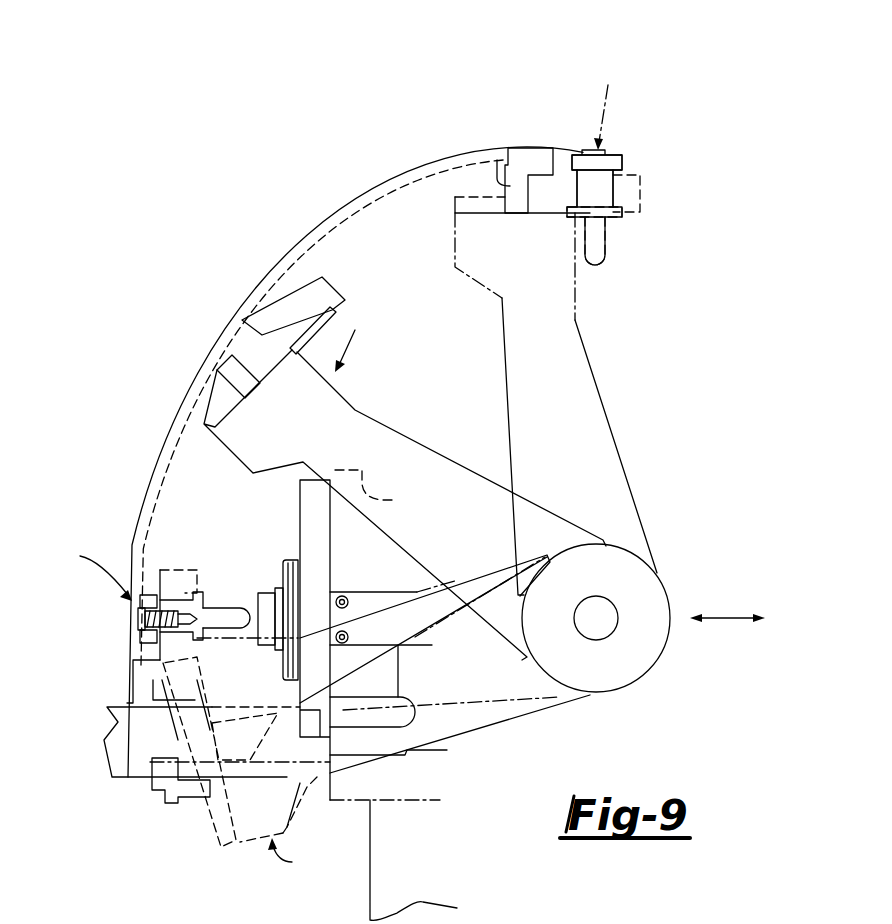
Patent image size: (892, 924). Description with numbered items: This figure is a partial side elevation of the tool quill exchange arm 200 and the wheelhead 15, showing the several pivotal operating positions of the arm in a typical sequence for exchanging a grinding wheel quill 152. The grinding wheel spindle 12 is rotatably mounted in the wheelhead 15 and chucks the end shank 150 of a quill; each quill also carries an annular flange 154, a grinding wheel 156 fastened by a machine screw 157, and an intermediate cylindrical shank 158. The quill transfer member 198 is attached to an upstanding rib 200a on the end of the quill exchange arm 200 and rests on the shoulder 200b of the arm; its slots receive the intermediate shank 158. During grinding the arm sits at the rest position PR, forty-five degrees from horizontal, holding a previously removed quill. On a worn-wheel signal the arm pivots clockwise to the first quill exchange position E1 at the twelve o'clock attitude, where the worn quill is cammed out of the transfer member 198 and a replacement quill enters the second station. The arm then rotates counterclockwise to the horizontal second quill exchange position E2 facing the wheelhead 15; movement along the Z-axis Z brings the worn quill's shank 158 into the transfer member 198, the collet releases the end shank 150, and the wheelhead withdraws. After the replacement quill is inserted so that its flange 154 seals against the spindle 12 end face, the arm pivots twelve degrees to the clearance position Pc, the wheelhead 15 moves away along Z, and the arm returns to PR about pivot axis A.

The grinding wheel spindle 12 is at (284, 590).
The wheelhead 15 is at (376, 492).
The end shank 150 is at (600, 250).
The quill 152 is at (620, 150).
The annular flange 154 is at (615, 217).
The grinding wheel 156 is at (622, 165).
The machine screw 157 is at (140, 615).
The intermediate cylindrical shank 158 is at (605, 197).
The quill transfer member 198 is at (520, 148).
The quill exchange arm 200 is at (355, 410).
The upstanding rib 200a is at (511, 188).
The shoulder 200b is at (278, 372).
The axis A is at (603, 618).
The Z-axis Z is at (741, 619).
The first quill exchange position E1 is at (610, 90).
The second quill exchange position E2 is at (90, 569).
The rest position PR is at (362, 339).
The clearance position Pc is at (288, 860).